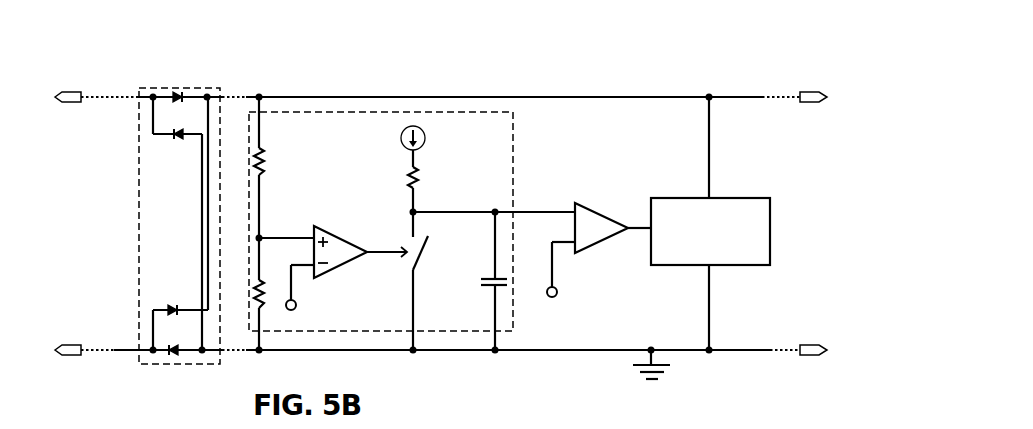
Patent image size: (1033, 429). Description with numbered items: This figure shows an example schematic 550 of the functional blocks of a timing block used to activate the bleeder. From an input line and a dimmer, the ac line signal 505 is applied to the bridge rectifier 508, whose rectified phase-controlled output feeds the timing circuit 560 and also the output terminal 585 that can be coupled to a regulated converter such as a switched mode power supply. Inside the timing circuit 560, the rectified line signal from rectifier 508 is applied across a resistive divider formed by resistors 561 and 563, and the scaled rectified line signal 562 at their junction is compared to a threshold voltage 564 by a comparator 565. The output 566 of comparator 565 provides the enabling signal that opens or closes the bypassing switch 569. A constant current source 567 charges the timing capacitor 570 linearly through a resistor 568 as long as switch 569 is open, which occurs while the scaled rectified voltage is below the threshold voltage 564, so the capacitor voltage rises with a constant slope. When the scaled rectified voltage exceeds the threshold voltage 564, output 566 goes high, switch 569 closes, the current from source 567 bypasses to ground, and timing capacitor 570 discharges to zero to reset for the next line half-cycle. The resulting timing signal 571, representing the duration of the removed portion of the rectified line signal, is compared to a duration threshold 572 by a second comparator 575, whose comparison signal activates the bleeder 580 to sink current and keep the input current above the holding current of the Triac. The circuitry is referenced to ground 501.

The ground 501 is at (630, 374).
The ac line signal 505 is at (90, 110).
The bridge rectifier 508 is at (175, 84).
The timing block schematic 550 is at (440, 188).
The timing circuit 560 is at (328, 112).
The resistor 561 is at (273, 164).
The scaled rectified line signal 562 is at (260, 234).
The resistor 563 is at (271, 297).
The threshold voltage 564 is at (304, 311).
The comparator 565 is at (332, 226).
The output of comparator 566 is at (373, 247).
The constant current source 567 is at (434, 139).
The resistor 568 is at (426, 178).
The bypassing switch 569 is at (428, 248).
The timing capacitor 570 is at (490, 274).
The timing signal 571 is at (522, 211).
The duration threshold 572 is at (565, 303).
The comparator 575 is at (633, 223).
The bleeder 580 is at (673, 196).
The output terminal 585 is at (834, 118).